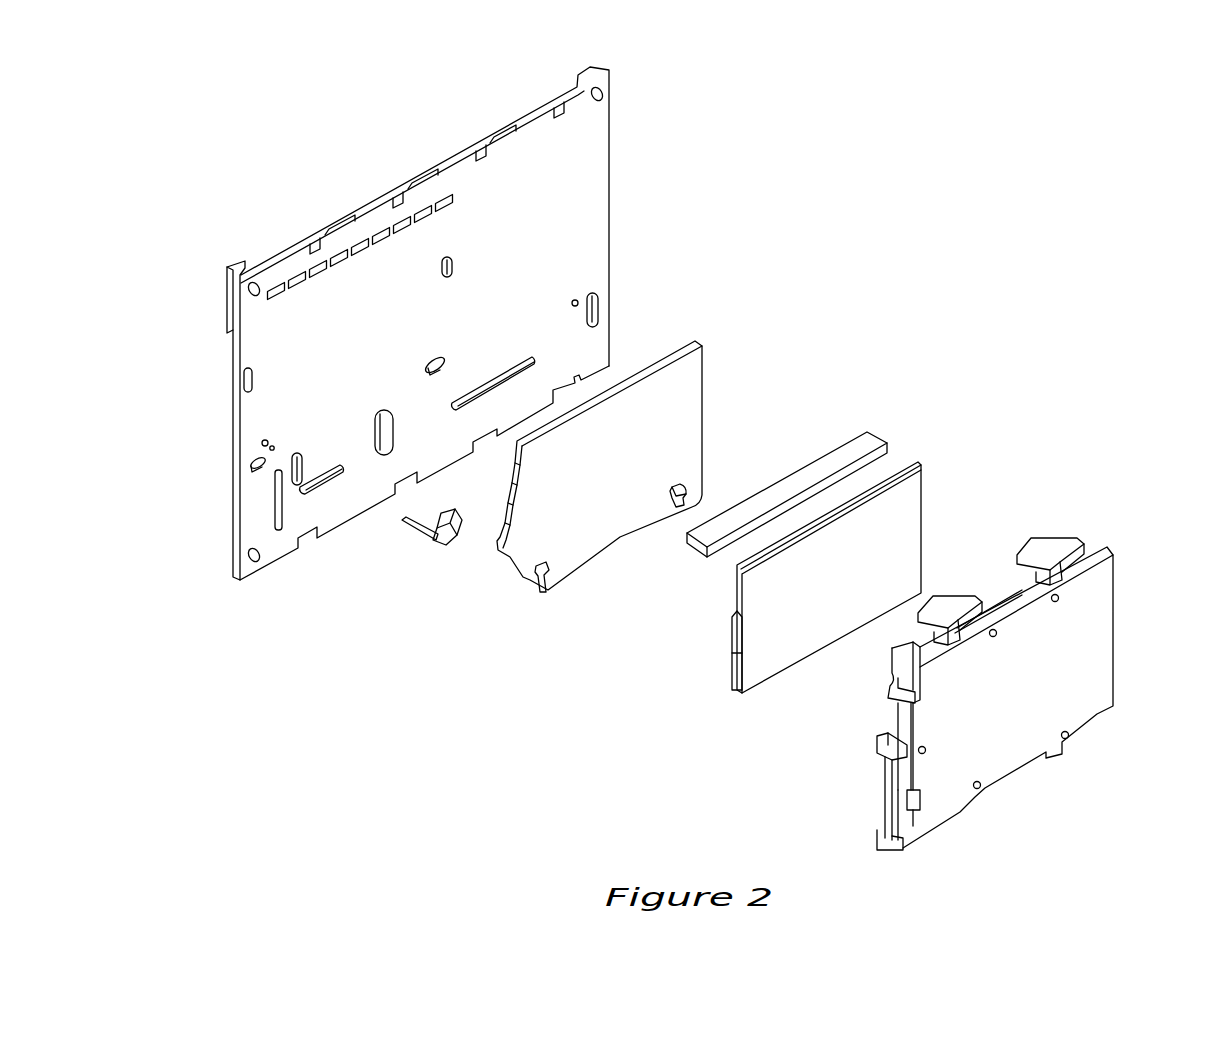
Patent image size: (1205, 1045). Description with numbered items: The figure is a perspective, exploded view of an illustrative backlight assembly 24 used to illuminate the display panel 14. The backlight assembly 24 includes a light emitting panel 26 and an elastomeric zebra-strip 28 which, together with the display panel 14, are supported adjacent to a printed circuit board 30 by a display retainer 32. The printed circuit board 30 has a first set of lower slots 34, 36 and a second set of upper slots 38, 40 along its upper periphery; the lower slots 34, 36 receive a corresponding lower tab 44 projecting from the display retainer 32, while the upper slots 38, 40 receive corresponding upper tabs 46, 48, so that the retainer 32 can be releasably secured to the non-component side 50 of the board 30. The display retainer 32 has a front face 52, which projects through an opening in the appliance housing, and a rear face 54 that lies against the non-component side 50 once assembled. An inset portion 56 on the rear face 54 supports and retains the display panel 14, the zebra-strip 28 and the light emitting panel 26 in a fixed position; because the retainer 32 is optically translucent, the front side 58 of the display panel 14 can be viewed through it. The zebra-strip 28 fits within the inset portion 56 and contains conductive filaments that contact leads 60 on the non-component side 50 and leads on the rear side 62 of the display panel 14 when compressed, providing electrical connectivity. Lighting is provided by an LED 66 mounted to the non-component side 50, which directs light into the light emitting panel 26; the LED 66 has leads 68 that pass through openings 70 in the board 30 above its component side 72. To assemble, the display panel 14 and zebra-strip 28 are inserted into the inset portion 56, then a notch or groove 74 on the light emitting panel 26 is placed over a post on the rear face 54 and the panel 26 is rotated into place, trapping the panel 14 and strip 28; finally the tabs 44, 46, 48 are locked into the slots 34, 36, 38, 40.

The display panel 14 is at (908, 513).
The backlight assembly 24 is at (903, 267).
The light emitting panel 26 is at (692, 373).
The elastomeric zebra-strip 28 is at (870, 440).
The printed circuit board 30 is at (592, 162).
The display retainer 32 is at (1093, 617).
The lower slot 34 is at (258, 470).
The lower slot 36 is at (433, 366).
The upper slot 38 is at (310, 242).
The upper slot 40 is at (408, 187).
The lower tab 44 is at (875, 747).
The upper tab 46 is at (927, 606).
The upper tab 48 is at (1040, 552).
The non-component side 50 is at (363, 337).
The front face 52 is at (977, 743).
The rear face 54 is at (1000, 595).
The inset portion 56 is at (1037, 675).
The front side 58 is at (760, 660).
The leads 60 is at (338, 258).
The rear side 62 is at (745, 563).
The LED 66 is at (452, 535).
The leads 68 is at (415, 530).
The openings 70 is at (270, 448).
The component side 72 is at (557, 226).
The notch or groove 74 is at (683, 490).